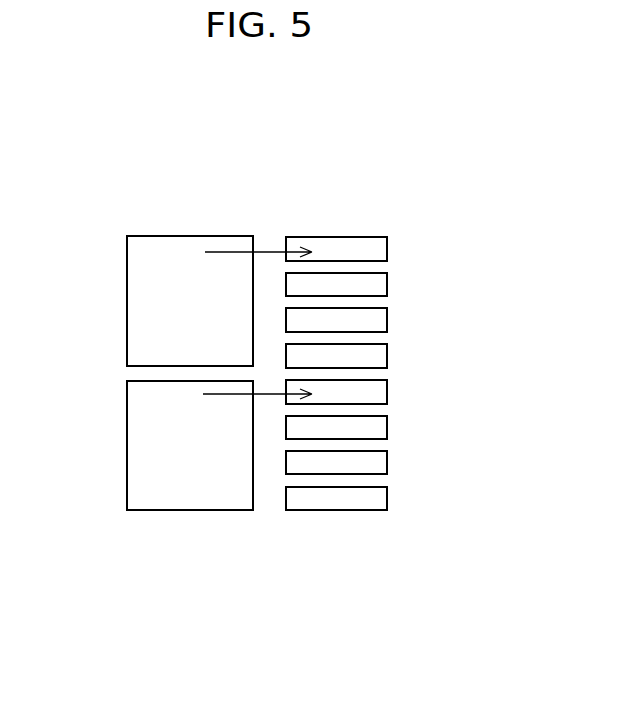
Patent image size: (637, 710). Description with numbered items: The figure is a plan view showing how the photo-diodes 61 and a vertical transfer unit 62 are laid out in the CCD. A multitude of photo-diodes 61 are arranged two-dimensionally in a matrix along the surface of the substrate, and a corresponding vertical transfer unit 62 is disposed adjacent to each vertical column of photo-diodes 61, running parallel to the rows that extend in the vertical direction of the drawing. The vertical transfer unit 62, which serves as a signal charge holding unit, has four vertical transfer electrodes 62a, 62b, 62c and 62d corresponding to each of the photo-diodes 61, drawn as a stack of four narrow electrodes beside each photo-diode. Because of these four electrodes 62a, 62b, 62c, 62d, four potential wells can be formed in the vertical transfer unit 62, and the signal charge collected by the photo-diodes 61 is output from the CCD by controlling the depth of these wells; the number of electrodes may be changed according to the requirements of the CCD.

The photo-diodes 61 is at (160, 333).
The vertical transfer unit 62 is at (345, 228).
The vertical transfer electrode 62a is at (370, 247).
The vertical transfer electrode 62b is at (370, 283).
The vertical transfer electrode 62c is at (370, 318).
The vertical transfer electrode 62d is at (370, 354).